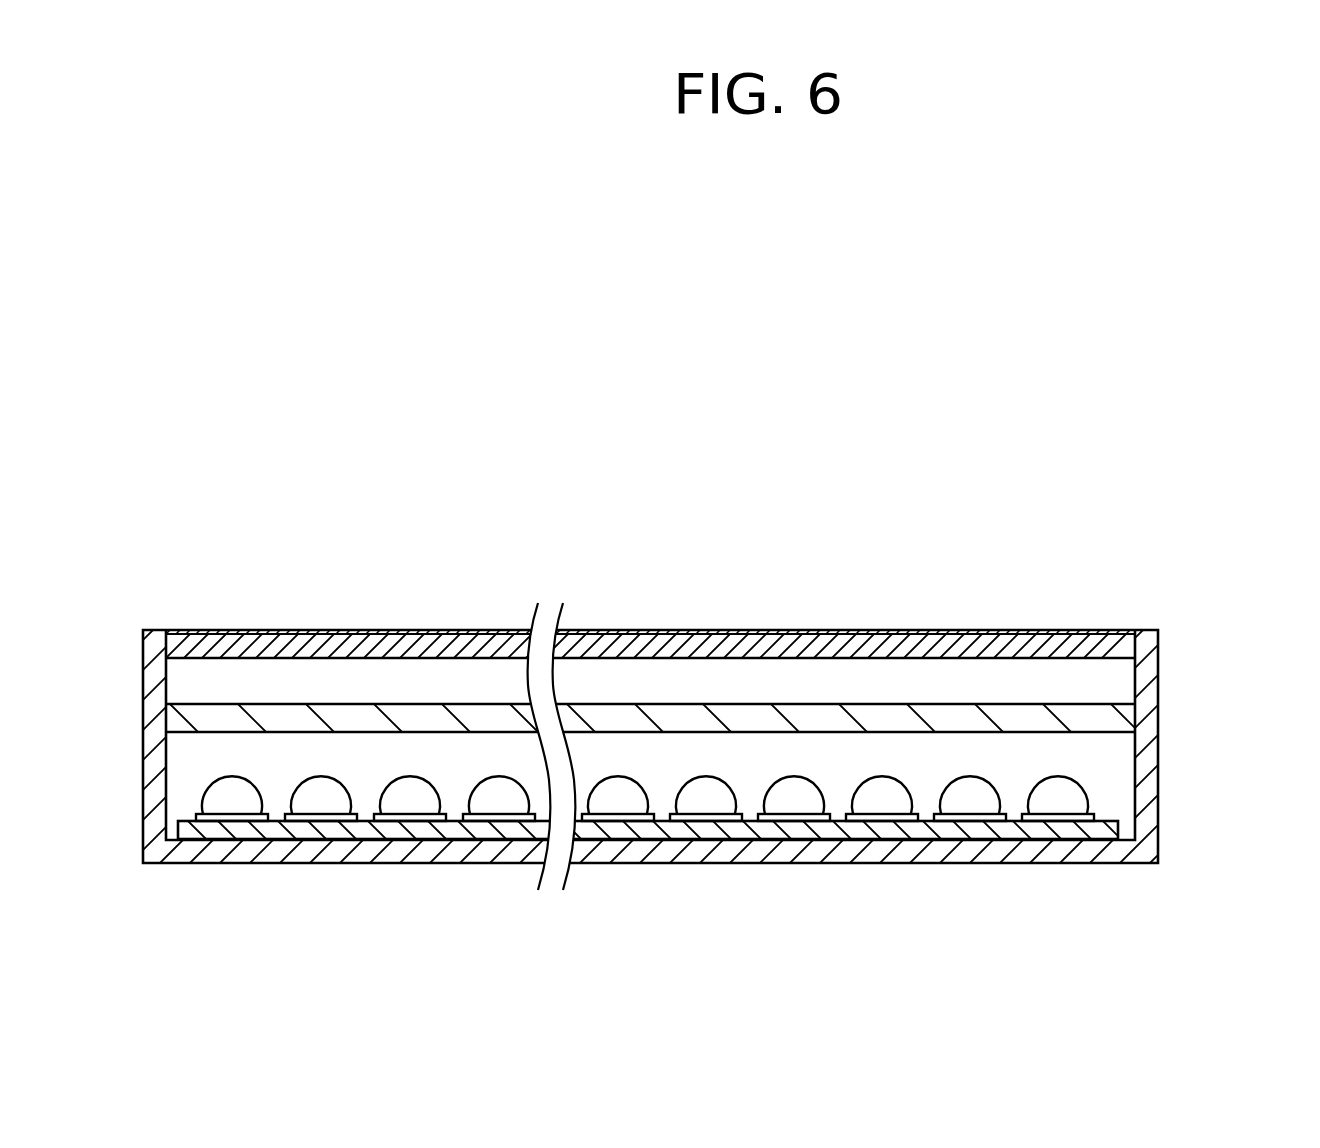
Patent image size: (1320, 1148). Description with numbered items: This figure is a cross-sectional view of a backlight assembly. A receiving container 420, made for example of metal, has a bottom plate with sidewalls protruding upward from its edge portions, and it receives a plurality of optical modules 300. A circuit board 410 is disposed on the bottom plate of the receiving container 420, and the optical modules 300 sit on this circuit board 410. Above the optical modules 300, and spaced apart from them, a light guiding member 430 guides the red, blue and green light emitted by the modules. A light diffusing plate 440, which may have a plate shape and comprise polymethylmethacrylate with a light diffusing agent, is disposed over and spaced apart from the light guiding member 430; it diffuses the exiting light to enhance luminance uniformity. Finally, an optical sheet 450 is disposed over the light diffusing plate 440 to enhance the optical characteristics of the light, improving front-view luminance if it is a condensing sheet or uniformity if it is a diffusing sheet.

The optical module 300 is at (797, 795).
The circuit board 410 is at (742, 832).
The receiving container 420 is at (1143, 804).
The light guiding member 430 is at (1120, 717).
The light diffusing plate 440 is at (1110, 647).
The optical sheet 450 is at (1103, 632).